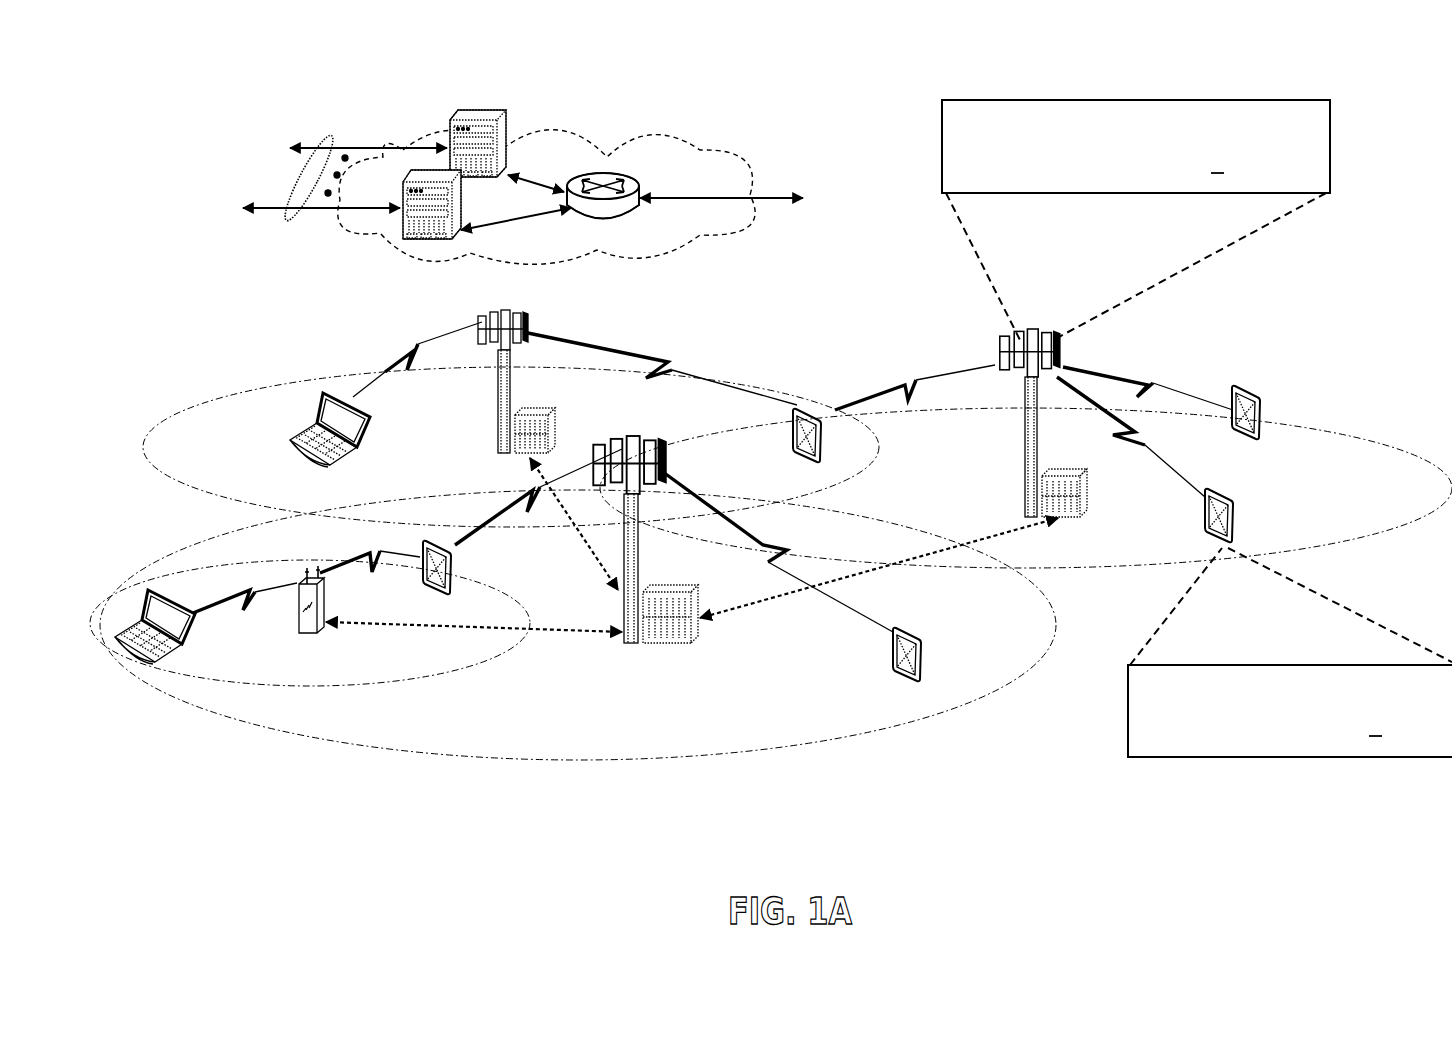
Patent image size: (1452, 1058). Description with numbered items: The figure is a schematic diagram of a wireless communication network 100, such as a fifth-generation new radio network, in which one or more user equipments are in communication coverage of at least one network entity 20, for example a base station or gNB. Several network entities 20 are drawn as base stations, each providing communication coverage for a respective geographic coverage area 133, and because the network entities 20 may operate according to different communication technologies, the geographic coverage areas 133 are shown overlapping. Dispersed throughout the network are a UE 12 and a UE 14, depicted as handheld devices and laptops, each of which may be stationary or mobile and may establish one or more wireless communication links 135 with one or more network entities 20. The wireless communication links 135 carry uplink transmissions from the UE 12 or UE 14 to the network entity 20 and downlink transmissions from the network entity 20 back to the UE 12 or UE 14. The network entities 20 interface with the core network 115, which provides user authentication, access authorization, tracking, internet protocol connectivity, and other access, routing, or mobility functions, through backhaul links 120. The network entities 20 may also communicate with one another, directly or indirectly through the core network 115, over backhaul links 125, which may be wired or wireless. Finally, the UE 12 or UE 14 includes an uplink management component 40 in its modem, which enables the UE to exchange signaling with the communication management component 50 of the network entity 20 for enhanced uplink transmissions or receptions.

The wireless communication network 100 is at (193, 84).
The core network 115 is at (302, 220).
The backhaul links 120 is at (313, 177).
The network entity 20 is at (498, 423).
The UE 12 is at (793, 442).
The UE 14 is at (345, 458).
The wireless communication links 135 is at (410, 350).
The backhaul links 125 is at (420, 628).
The geographic coverage area 133 is at (203, 508).
The communication management component 50 is at (1136, 220).
The uplink management component 40 is at (1290, 652).